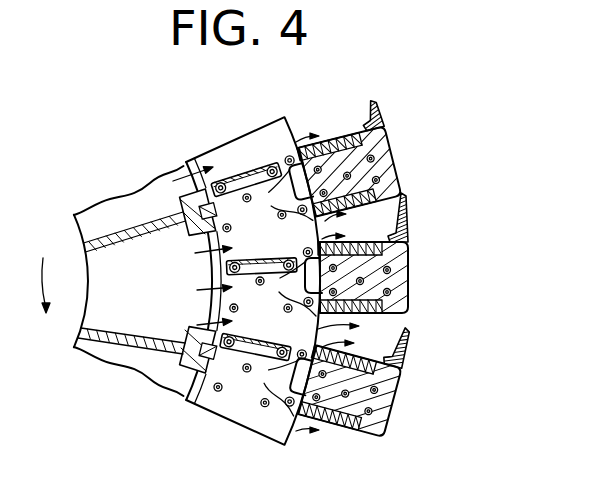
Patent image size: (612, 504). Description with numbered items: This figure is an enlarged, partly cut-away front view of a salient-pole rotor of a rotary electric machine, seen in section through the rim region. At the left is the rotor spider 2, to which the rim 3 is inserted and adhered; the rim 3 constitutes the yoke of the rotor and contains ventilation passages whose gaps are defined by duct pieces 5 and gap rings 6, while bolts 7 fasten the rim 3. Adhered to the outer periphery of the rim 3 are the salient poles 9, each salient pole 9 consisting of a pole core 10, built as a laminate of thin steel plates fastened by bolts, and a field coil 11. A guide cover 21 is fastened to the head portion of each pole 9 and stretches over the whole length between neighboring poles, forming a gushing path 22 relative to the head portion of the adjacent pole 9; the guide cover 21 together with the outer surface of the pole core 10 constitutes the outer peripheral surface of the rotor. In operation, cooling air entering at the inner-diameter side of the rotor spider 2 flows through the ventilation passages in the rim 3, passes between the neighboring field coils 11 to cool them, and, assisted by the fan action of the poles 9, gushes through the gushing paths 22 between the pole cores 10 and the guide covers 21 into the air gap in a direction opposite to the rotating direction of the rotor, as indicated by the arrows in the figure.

The rotor spider 2 is at (113, 356).
The rim 3 is at (250, 283).
The duct piece 5 is at (239, 168).
The gap ring 6 is at (218, 182).
The bolt 7 is at (268, 167).
The salient pole 9 is at (359, 399).
The pole core 10 is at (373, 437).
The field coil 11 is at (328, 431).
The guide cover 21 is at (402, 342).
The gushing path 22 is at (400, 318).